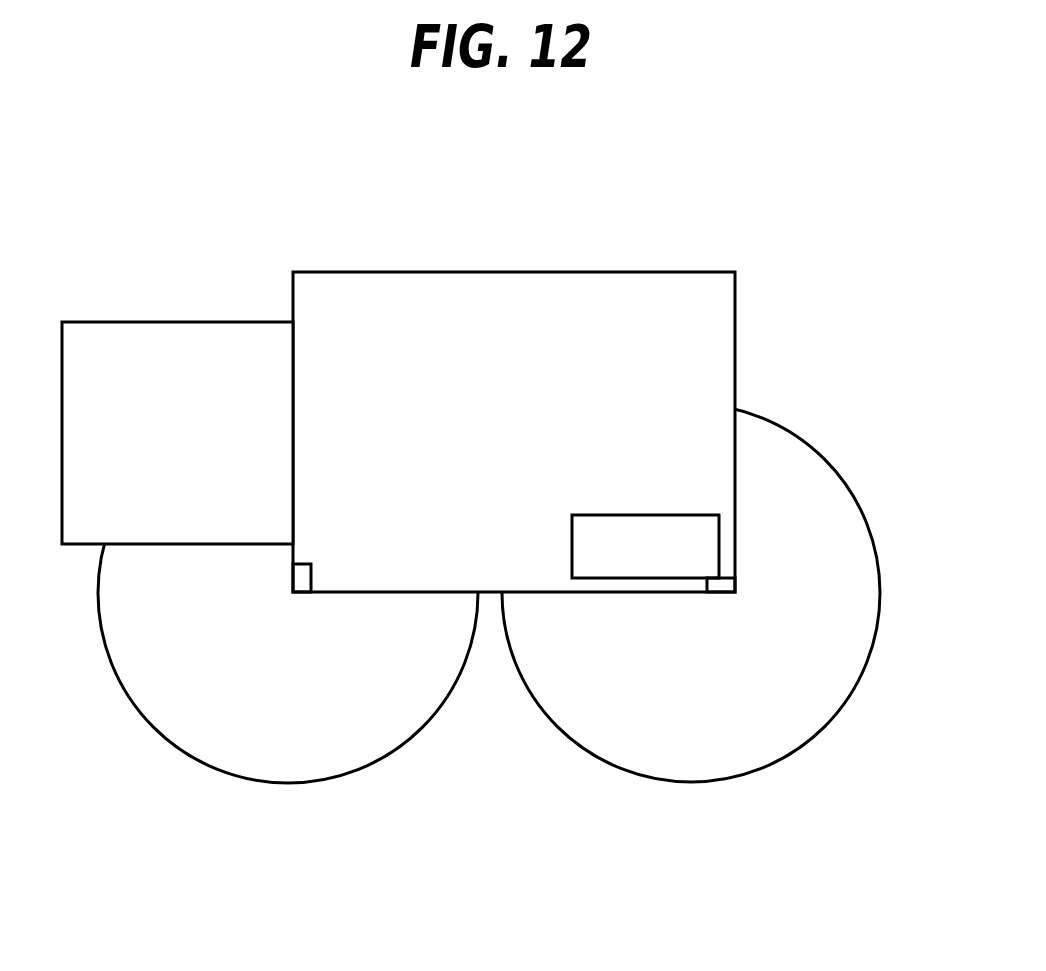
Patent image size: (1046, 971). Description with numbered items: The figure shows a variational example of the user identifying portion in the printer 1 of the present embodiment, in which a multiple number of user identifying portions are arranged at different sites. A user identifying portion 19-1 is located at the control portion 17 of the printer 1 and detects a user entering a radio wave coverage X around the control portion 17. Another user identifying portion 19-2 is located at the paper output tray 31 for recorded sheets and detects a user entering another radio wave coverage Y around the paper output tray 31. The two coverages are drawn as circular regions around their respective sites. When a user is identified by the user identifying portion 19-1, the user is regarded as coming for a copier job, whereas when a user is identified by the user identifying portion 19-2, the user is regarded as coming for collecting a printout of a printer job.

The printer 1 is at (541, 270).
The paper output tray 31 is at (166, 322).
The control portion 17 is at (658, 515).
The user identifying portion 19-1 is at (725, 595).
The user identifying portion 19-2 is at (311, 578).
The radio wave coverage X is at (738, 760).
The radio wave coverage Y is at (265, 760).